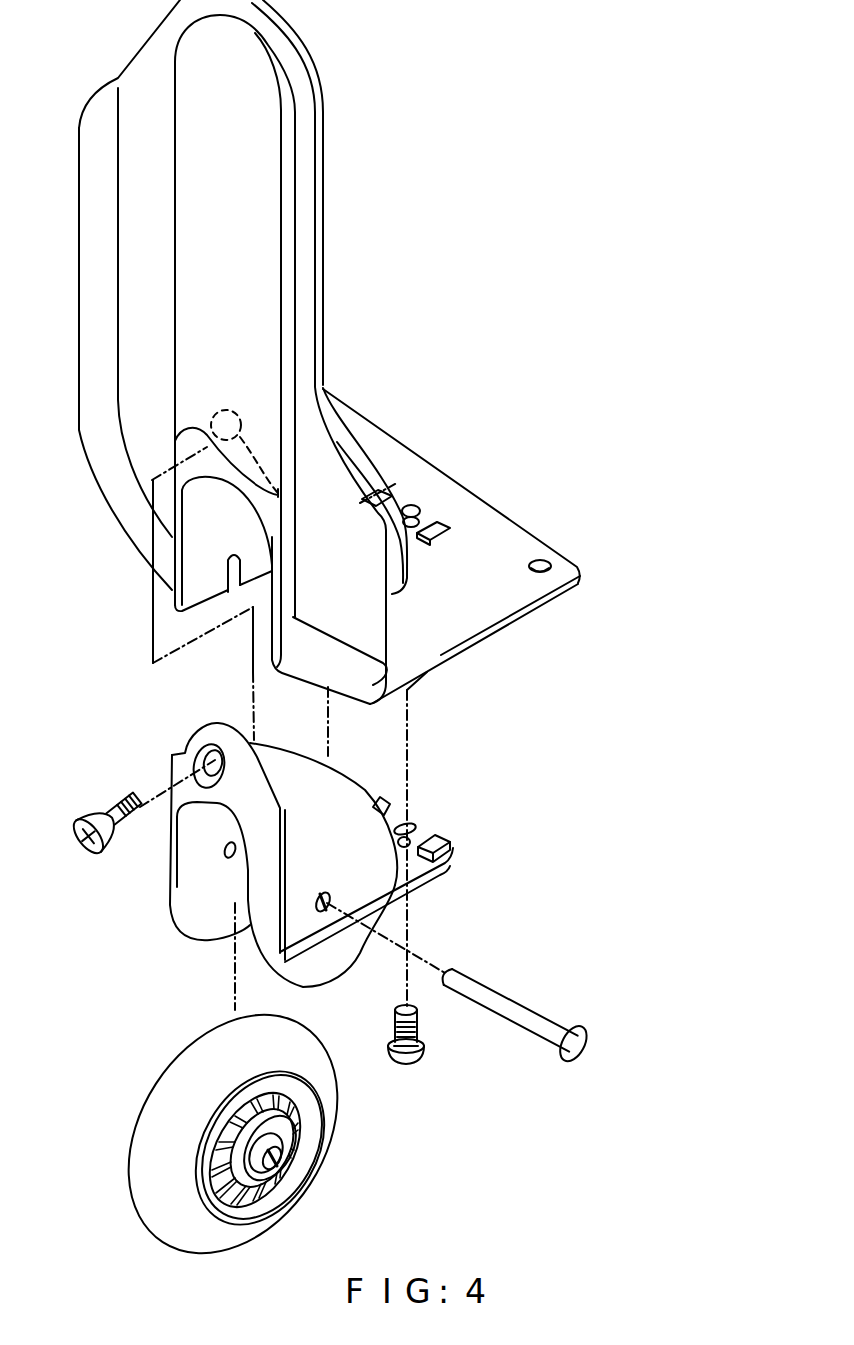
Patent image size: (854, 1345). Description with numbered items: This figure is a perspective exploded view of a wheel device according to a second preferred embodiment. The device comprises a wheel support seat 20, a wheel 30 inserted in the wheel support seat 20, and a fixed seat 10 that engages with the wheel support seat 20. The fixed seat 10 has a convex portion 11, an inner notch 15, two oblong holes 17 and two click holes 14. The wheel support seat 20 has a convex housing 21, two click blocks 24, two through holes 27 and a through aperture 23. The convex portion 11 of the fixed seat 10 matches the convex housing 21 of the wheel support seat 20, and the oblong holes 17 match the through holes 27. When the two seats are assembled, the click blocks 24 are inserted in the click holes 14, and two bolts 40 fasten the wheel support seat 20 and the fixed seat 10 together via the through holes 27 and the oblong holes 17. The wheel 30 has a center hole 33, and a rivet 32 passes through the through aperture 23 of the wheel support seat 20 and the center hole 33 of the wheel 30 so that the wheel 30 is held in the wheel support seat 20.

The fixed seat 10 is at (322, 173).
The convex portion 11 is at (350, 458).
The click holes 14 is at (380, 495).
The inner notch 15 is at (232, 557).
The oblong holes 17 is at (227, 430).
The wheel support seat 20 is at (170, 868).
The convex housing 21 is at (299, 757).
The through aperture 23 is at (327, 897).
The click blocks 24 is at (378, 798).
The through holes 27 is at (180, 753).
The wheel 30 is at (152, 1210).
The rivet 32 is at (527, 1013).
The center hole 33 is at (277, 1160).
The bolts 40 is at (80, 820).